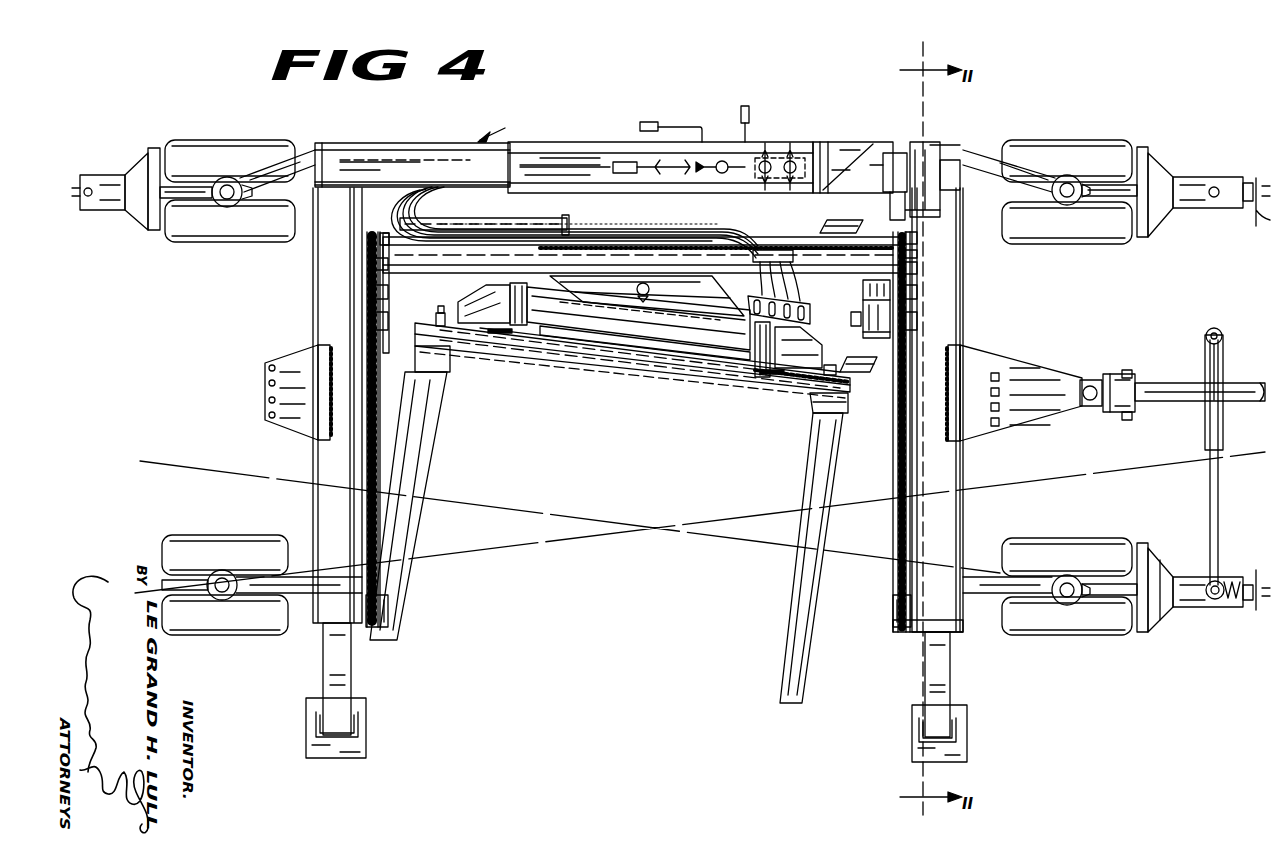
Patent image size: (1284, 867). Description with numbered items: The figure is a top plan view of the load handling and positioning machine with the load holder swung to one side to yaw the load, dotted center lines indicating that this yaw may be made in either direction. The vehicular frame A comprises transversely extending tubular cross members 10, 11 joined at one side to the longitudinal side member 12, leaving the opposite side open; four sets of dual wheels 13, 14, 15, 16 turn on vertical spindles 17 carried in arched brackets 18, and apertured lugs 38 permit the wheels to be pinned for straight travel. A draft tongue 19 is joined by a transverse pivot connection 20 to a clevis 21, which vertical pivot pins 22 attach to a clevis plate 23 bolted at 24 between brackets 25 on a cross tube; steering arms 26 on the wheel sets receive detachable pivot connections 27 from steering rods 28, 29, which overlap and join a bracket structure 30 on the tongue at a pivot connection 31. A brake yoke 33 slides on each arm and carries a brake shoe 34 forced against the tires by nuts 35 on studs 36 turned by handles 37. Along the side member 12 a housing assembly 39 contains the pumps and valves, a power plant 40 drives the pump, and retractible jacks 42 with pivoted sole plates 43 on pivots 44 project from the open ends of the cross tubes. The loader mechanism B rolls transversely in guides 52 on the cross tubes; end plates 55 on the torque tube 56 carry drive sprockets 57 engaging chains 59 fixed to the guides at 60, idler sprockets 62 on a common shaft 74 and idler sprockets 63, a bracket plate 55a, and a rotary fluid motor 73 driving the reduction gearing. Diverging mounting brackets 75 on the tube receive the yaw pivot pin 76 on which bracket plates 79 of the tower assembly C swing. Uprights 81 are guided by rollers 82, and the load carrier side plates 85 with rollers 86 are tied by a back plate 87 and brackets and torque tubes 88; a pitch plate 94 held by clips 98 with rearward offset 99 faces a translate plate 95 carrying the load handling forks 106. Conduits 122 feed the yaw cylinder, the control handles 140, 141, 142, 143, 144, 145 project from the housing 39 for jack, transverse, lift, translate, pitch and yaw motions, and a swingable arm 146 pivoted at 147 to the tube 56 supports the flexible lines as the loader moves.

The cross member 10 is at (963, 525).
The cross member 11 is at (313, 494).
The side member 12 is at (395, 152).
The dual wheels 13 is at (1072, 142).
The dual wheels 14 is at (1080, 636).
The dual wheels 15 is at (236, 637).
The dual wheels 16 is at (228, 140).
The vertical spindle 17 is at (1072, 185).
The arched brackets 18 is at (268, 165).
The draft tongue 19 is at (1176, 388).
The transverse pivot connection 20 is at (1127, 420).
The clevis 21 is at (1115, 374).
The vertical pivot pins 22 is at (1090, 402).
The clevis plate 23 is at (1040, 372).
The bolts 24 is at (1000, 376).
The brackets 25 is at (290, 428).
The steering arms 26 is at (192, 200).
The detachable pivot connections 27 is at (1222, 582).
The steering rod 28 is at (1220, 505).
The steering rod 29 is at (1218, 318).
The bracket structure 30 is at (1205, 420).
The pivot connection 31 is at (1222, 336).
The brake yoke 33 is at (120, 172).
The brake shoe 34 is at (156, 232).
The nuts 35 is at (1262, 215).
The studs 36 is at (1258, 610).
The handles 37 is at (1245, 605).
The apertured lugs 38 is at (230, 200).
The housing assembly 39 is at (540, 150).
The power plant 40 is at (925, 142).
The jacks 42 is at (351, 676).
The sole plates 43 is at (366, 715).
The pivot 44 is at (318, 727).
The guides 52 is at (388, 600).
The end plates 55 is at (368, 240).
The bracket plate 55a is at (863, 300).
The torque tube 56 is at (525, 238).
The drive sprockets 57 is at (372, 292).
The sprocket chains 59 is at (372, 388).
The chain connection 60 is at (893, 628).
The idler sprockets 62 is at (372, 264).
The idler sprockets 63 is at (372, 320).
The rotary fluid motor 73 is at (851, 320).
The shaft 74 is at (917, 254).
The mounting brackets 75 is at (582, 276).
The yaw pivot pin 76 is at (652, 290).
The bracket plates 79 is at (750, 304).
The uprights 81 is at (500, 312).
The rollers 82 is at (638, 318).
The side plates 85 is at (490, 310).
The rollers 86 is at (535, 328).
The back plate 87 is at (628, 348).
The brackets and torque tubes 88 is at (485, 290).
The pitch plate 94 is at (684, 368).
The translate plate 95 is at (712, 375).
The clips 98 is at (436, 316).
The rearward offset 99 is at (440, 306).
The load handling forks 106 is at (415, 525).
The conduits 122 is at (435, 186).
The jack valve handle 140 is at (835, 160).
The transverse movement handle 141 is at (795, 160).
The vertical movement handle 142 is at (750, 120).
The translation handle 143 is at (720, 175).
The pitch handle 144 is at (690, 125).
The yaw handle 145 is at (648, 178).
The swingable arm 146 is at (458, 224).
The pivot 147 is at (750, 235).
The vehicular frame A is at (494, 126).
The loader mechanism B is at (533, 360).
The tower assembly C is at (668, 361).